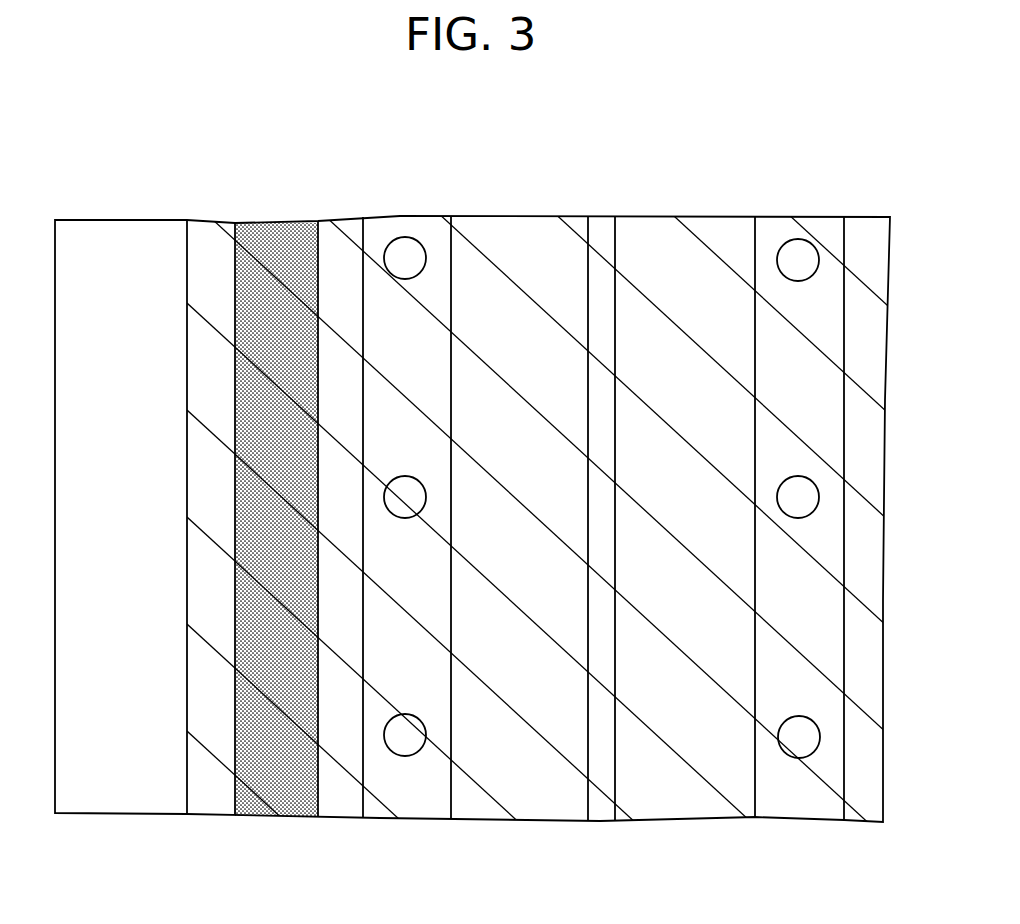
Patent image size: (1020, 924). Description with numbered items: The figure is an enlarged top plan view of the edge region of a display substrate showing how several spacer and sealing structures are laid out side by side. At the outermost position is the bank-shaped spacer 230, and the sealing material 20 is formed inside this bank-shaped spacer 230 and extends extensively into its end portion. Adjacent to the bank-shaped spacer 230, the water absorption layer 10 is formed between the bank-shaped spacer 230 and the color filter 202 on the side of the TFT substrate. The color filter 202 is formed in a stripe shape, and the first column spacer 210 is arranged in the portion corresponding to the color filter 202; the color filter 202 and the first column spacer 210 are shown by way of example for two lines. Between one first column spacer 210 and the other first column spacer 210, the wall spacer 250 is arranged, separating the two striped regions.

The water absorption layer 10 is at (268, 250).
The sealing material 20 is at (682, 273).
The color filter 202 is at (440, 282).
The first column spacer 210 is at (418, 240).
The bank-shaped spacer 230 is at (112, 244).
The wall spacer 250 is at (602, 247).